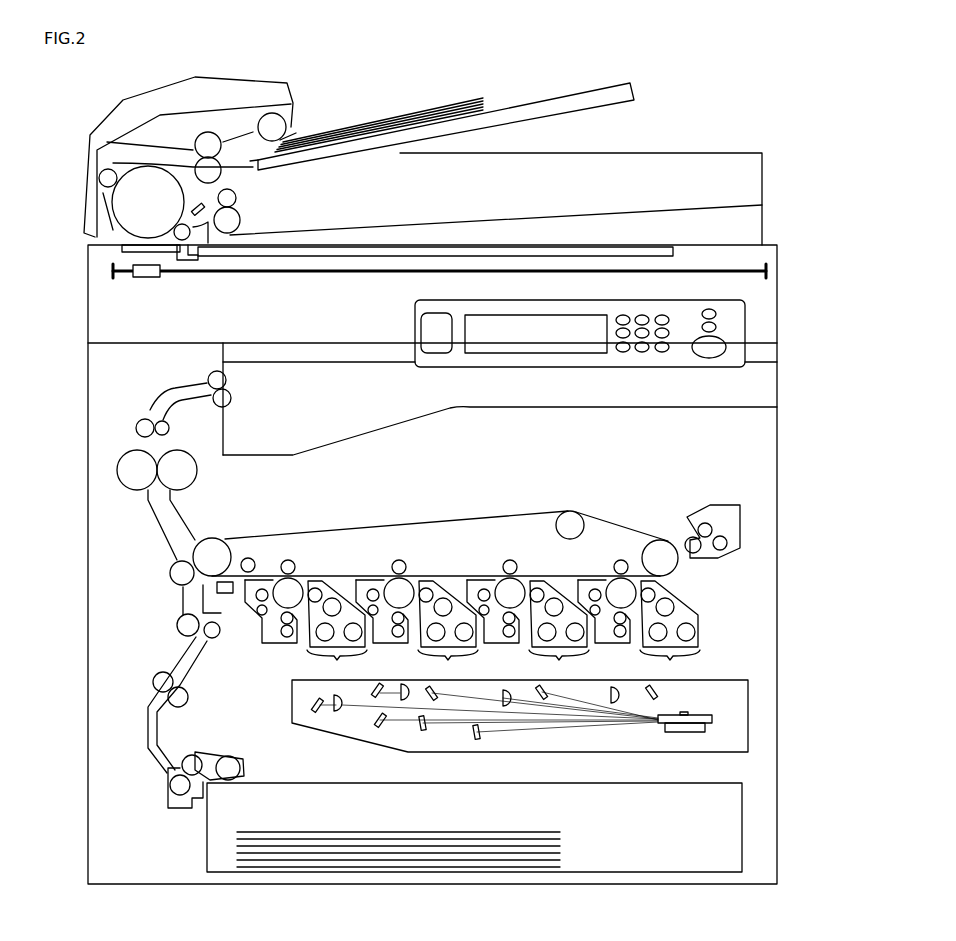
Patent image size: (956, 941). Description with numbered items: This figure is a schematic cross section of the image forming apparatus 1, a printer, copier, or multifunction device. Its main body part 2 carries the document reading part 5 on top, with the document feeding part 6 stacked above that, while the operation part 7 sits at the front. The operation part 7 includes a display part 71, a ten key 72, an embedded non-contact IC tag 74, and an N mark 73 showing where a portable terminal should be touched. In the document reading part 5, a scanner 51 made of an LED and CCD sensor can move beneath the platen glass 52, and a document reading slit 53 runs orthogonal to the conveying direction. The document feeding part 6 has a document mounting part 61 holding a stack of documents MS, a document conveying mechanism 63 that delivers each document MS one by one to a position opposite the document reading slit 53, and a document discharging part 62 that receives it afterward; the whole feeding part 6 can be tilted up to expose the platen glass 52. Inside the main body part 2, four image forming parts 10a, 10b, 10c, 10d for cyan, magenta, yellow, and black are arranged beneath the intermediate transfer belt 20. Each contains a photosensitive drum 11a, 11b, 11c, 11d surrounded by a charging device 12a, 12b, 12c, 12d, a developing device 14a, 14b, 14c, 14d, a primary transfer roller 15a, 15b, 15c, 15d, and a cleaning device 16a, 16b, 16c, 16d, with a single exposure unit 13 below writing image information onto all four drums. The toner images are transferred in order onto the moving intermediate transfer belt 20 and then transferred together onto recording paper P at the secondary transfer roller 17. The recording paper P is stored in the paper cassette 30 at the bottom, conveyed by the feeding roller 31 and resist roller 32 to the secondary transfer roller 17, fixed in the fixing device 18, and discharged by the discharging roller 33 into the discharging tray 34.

The image forming apparatus 1 is at (740, 56).
The main body part 2 is at (786, 492).
The document reading part 5 is at (70, 260).
The document feeding part 6 is at (434, 78).
The operation part 7 is at (768, 313).
The image forming part 10a is at (337, 663).
The image forming part 10b is at (448, 663).
The image forming part 10c is at (559, 663).
The image forming part 10d is at (670, 663).
The photosensitive drum 11a is at (313, 677).
The photosensitive drum 11b is at (404, 627).
The photosensitive drum 11c is at (515, 627).
The photosensitive drum 11d is at (626, 627).
The charging device 12a is at (287, 633).
The charging device 12b is at (384, 628).
The charging device 12c is at (494, 628).
The charging device 12d is at (606, 628).
The exposure unit 13 is at (748, 695).
The developing device 14a is at (328, 590).
The developing device 14b is at (449, 595).
The developing device 14c is at (559, 595).
The developing device 14d is at (688, 614).
The primary transfer roller 15a is at (290, 562).
The primary transfer roller 15b is at (416, 555).
The primary transfer roller 15c is at (526, 555).
The primary transfer roller 15d is at (638, 555).
The cleaning device 16a is at (262, 588).
The cleaning device 16b is at (380, 569).
The cleaning device 16c is at (490, 569).
The cleaning device 16d is at (602, 569).
The secondary transfer roller 17 is at (174, 580).
The fixing device 18 is at (125, 465).
The intermediate transfer belt 20 is at (240, 531).
The paper cassette 30 is at (742, 822).
The feeding roller 31 is at (238, 760).
The resist roller 32 is at (213, 640).
The discharging roller 33 is at (227, 380).
The discharging tray 34 is at (345, 428).
The scanner 51 is at (148, 283).
The platen glass 52 is at (598, 247).
The document reading slit 53 is at (158, 250).
The document mounting part 61 is at (498, 98).
The document discharging part 62 is at (500, 216).
The document conveying mechanism 63 is at (134, 100).
The display part 71 is at (553, 335).
The ten key 72 is at (640, 333).
The N mark 73 is at (453, 333).
The non-contact IC tag 74 is at (440, 345).
The document MS is at (369, 120).
The recording paper P is at (455, 838).